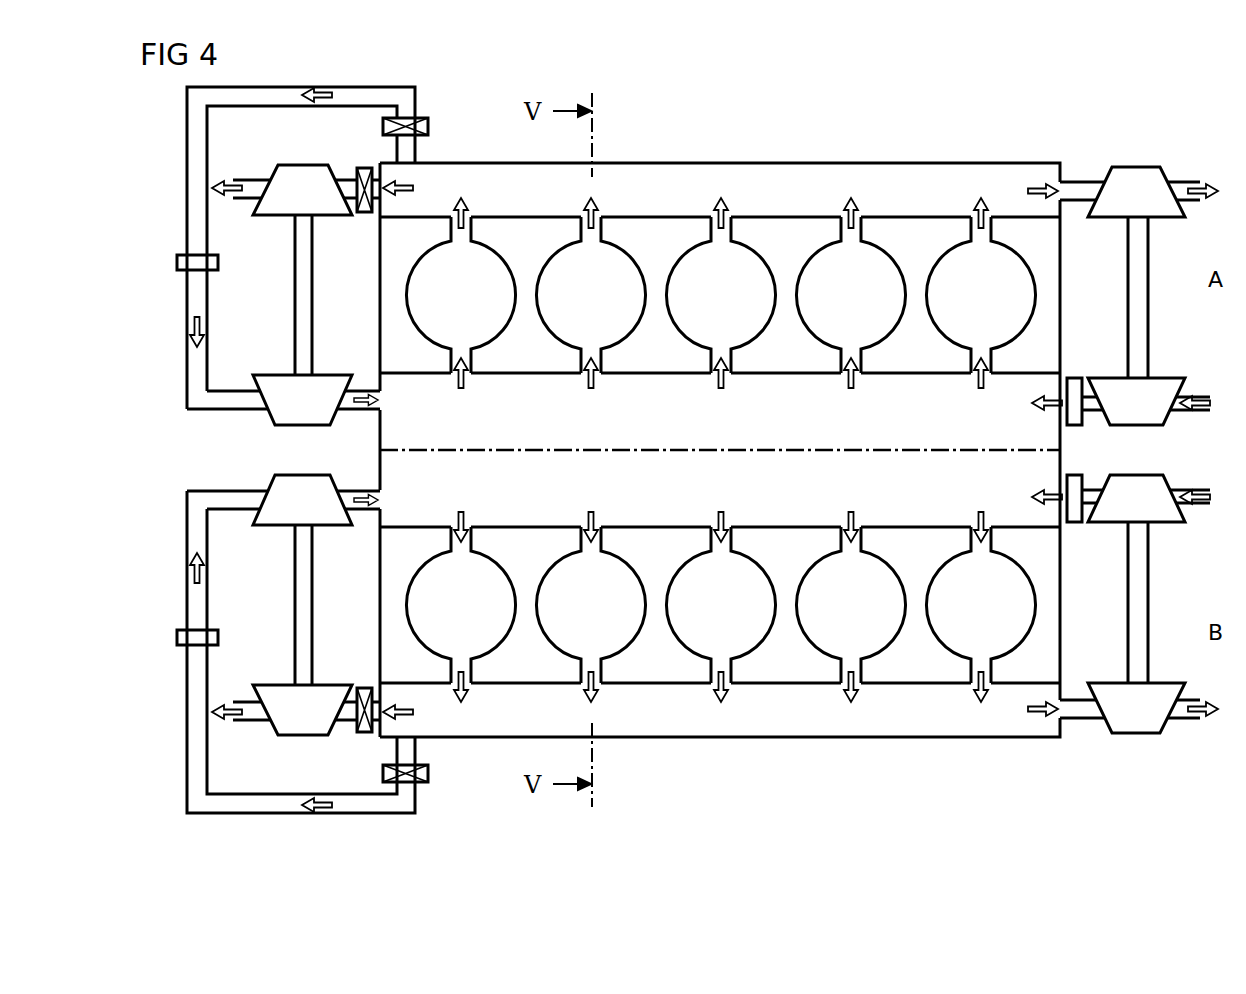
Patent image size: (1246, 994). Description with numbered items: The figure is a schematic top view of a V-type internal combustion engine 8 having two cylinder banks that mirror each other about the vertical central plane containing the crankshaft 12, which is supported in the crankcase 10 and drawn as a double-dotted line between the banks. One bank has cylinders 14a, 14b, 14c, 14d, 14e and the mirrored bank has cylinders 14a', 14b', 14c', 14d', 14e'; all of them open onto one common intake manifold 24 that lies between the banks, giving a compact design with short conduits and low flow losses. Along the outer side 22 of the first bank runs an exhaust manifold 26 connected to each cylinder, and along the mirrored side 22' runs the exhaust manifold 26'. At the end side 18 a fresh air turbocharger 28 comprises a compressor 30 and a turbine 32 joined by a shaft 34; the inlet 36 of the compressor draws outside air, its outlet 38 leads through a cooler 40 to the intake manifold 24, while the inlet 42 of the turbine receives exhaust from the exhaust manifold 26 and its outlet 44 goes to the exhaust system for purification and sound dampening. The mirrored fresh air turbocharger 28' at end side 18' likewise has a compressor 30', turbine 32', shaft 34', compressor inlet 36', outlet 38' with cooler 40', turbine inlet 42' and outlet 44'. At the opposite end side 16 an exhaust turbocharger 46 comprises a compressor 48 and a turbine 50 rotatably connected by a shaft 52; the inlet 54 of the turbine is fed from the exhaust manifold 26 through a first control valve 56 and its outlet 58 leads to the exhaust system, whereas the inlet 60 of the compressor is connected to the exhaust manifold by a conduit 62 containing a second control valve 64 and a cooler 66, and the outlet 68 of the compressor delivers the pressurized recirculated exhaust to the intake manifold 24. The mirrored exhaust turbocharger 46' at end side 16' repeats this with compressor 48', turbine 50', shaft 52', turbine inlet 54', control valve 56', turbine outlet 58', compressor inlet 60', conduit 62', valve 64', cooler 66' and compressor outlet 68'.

The internal combustion engine 8 is at (990, 138).
The crankcase 10 is at (1072, 285).
The crankshaft 12 is at (620, 452).
The cylinder 14a is at (472, 295).
The cylinder 14b is at (603, 295).
The cylinder 14c is at (732, 295).
The cylinder 14d is at (863, 295).
The cylinder 14e is at (992, 295).
The cylinder 14a' is at (475, 605).
The cylinder 14b' is at (606, 605).
The cylinder 14c' is at (735, 605).
The cylinder 14d' is at (866, 605).
The cylinder 14e' is at (995, 605).
The end side 16 is at (351, 277).
The end side 16' is at (351, 623).
The end side 18 is at (1090, 330).
The end side 18' is at (1093, 575).
The side 22 is at (540, 134).
The side 22' is at (540, 764).
The intake manifold 24 is at (790, 436).
The exhaust manifold 26 is at (880, 149).
The exhaust manifold 26' is at (880, 751).
The fresh air turbocharger 28 is at (1155, 271).
The fresh air turbocharger 28' is at (1158, 631).
The compressor 30 is at (1136, 383).
The compressor 30' is at (1136, 518).
The turbine 32 is at (1136, 167).
The turbine 32' is at (1136, 735).
The shaft 34 is at (1166, 297).
The shaft 34' is at (1138, 602).
The inlet of the compressor 36 is at (1192, 375).
The inlet of the compressor 36' is at (1195, 526).
The outlet of the compressor 38 is at (1102, 375).
The outlet of the compressor 38' is at (1105, 526).
The cooler 40 is at (1076, 380).
The cooler 40' is at (1079, 525).
The inlet of the turbine 42 is at (1082, 166).
The inlet of the turbine 42' is at (1082, 733).
The outlet of the turbine 44 is at (1192, 166).
The outlet of the turbine 44' is at (1192, 736).
The exhaust turbocharger 46 is at (288, 272).
The exhaust turbocharger 46' is at (288, 628).
The compressor 48 is at (302, 379).
The compressor 48' is at (302, 520).
The turbine 50 is at (302, 167).
The turbine 50' is at (302, 733).
The shaft 52 is at (277, 295).
The shaft 52' is at (277, 605).
The inlet of the turbine 54 is at (353, 170).
The inlet of the turbine 54' is at (356, 729).
The first control valve 56 is at (361, 222).
The first control valve 56' is at (361, 678).
The outlet of the turbine 58 is at (243, 163).
The outlet of the turbine 58' is at (243, 736).
The inlet of the compressor 60 is at (227, 380).
The inlet of the compressor 60' is at (227, 480).
The conduit 62 is at (276, 248).
The conduit 62' is at (276, 652).
The second control valve 64 is at (433, 119).
The second control valve 64' is at (436, 781).
The cooler 66 is at (224, 262).
The cooler 66' is at (227, 638).
The outlet of the compressor 68 is at (360, 375).
The outlet of the compressor 68' is at (358, 475).